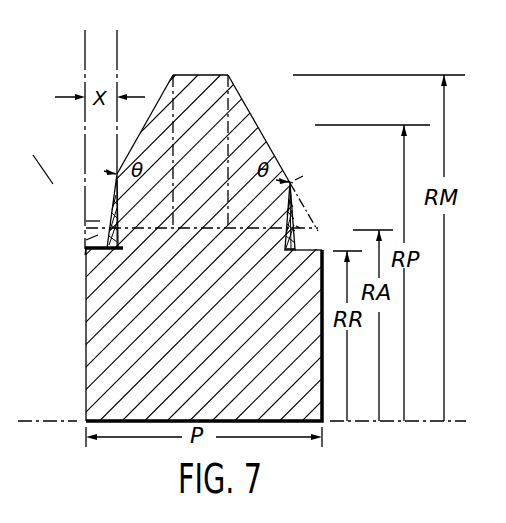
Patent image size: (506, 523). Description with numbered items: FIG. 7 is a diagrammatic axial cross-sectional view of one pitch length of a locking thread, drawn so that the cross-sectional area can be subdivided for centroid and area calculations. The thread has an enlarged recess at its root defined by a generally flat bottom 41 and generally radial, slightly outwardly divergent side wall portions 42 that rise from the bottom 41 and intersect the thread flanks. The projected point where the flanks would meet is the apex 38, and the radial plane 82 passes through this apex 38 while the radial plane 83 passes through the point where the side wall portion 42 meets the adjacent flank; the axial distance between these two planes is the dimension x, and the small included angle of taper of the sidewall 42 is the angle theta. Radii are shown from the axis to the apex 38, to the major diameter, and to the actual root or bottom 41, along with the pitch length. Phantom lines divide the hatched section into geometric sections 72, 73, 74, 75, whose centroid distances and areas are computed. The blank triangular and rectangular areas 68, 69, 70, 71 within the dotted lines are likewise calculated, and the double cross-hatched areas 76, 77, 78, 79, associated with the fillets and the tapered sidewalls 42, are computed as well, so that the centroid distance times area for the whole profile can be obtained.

The apex 38 is at (86, 221).
The bottom 41 is at (85, 255).
The side wall portions 42 is at (298, 227).
The blank area 68 is at (296, 183).
The blank area 69 is at (316, 229).
The blank area 70 is at (105, 200).
The blank area 71 is at (86, 240).
The geometric section 72 is at (86, 345).
The geometric section 73 is at (151, 114).
The geometric section 74 is at (249, 110).
The geometric section 75 is at (190, 75).
The fillet and tapered sidewall area 76 is at (119, 207).
The fillet and tapered sidewall area 77 is at (286, 206).
The fillet and tapered sidewall area 78 is at (115, 250).
The fillet and tapered sidewall area 79 is at (285, 252).
The radial plane 82 is at (85, 68).
The radial plane 83 is at (120, 62).